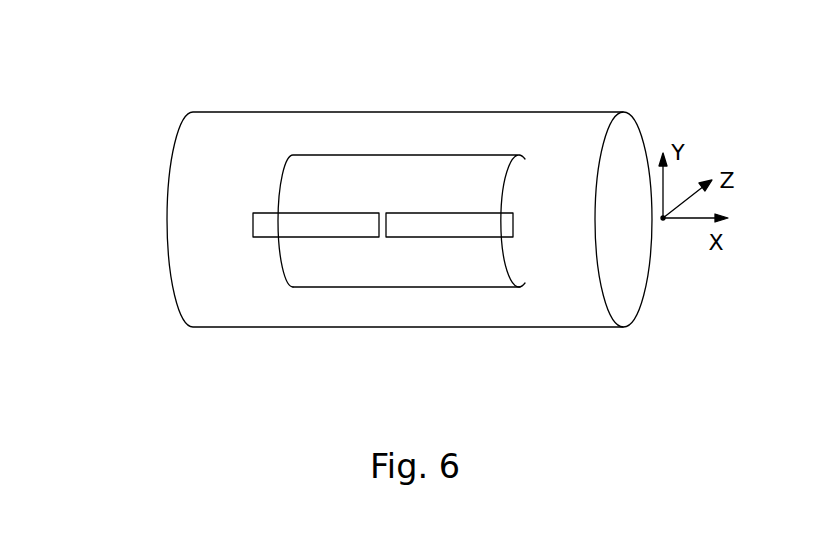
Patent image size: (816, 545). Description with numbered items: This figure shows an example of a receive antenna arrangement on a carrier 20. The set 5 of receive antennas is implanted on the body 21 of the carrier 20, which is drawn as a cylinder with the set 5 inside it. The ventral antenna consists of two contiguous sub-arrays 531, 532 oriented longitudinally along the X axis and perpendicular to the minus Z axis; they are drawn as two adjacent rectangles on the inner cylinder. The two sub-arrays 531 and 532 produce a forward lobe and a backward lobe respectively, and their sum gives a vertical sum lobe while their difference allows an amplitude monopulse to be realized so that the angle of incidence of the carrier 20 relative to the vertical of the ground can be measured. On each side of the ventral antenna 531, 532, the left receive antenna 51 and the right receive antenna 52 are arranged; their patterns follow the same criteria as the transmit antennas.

The set of receive antennas 5 is at (280, 227).
The carrier 20 is at (343, 227).
The body of the carrier 21 is at (577, 328).
The left receive antenna 51 is at (398, 153).
The right receive antenna 52 is at (360, 287).
The first sub-array of the ventral antenna 531 is at (253, 227).
The second sub-array of the ventral antenna 532 is at (468, 239).